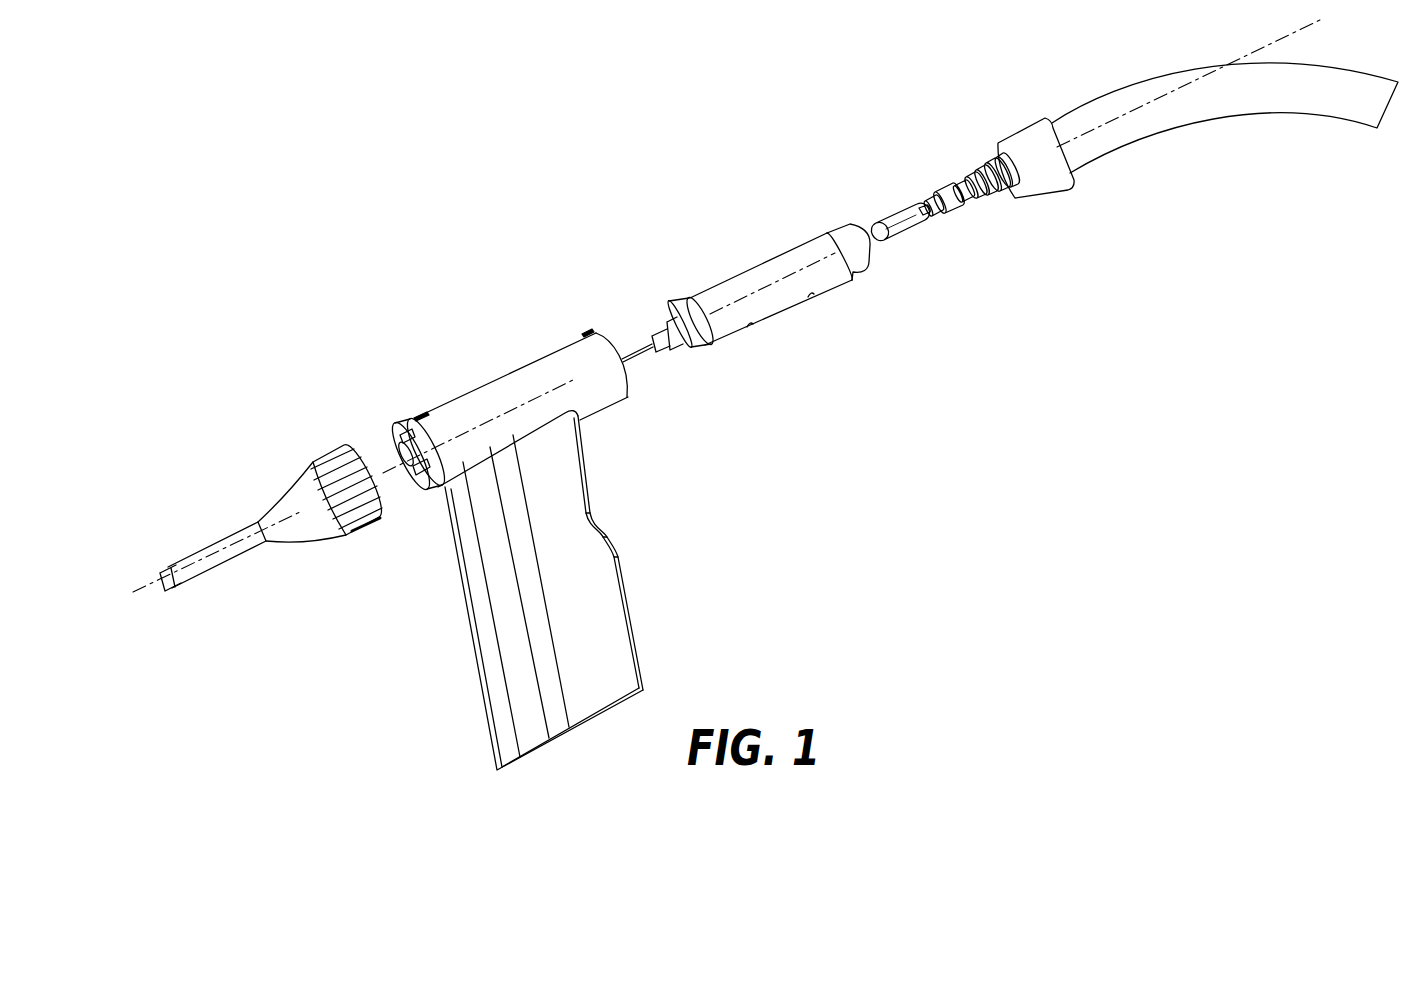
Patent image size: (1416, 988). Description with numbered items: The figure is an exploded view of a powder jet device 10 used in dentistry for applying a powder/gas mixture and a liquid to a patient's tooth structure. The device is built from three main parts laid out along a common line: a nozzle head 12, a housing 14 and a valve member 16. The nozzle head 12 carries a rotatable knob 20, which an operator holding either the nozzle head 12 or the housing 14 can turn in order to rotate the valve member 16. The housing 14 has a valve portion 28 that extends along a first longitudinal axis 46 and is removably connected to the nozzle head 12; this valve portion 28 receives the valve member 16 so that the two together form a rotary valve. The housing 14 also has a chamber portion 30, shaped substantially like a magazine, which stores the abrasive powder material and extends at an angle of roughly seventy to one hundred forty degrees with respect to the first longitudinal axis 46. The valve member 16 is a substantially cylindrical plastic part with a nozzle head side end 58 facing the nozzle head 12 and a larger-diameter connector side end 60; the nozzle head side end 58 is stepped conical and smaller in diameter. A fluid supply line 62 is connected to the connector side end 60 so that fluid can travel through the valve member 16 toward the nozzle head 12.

The powder jet device 10 is at (399, 270).
The nozzle head 12 is at (292, 497).
The housing 14 is at (500, 387).
The valve member 16 is at (787, 310).
The rotatable knob 20 is at (332, 468).
The valve portion 28 is at (584, 330).
The chamber portion 30 is at (615, 657).
The first longitudinal axis 46 is at (594, 377).
The nozzle head side end 58 is at (682, 338).
The connector side end 60 is at (817, 238).
The fluid supply line 62 is at (1133, 97).